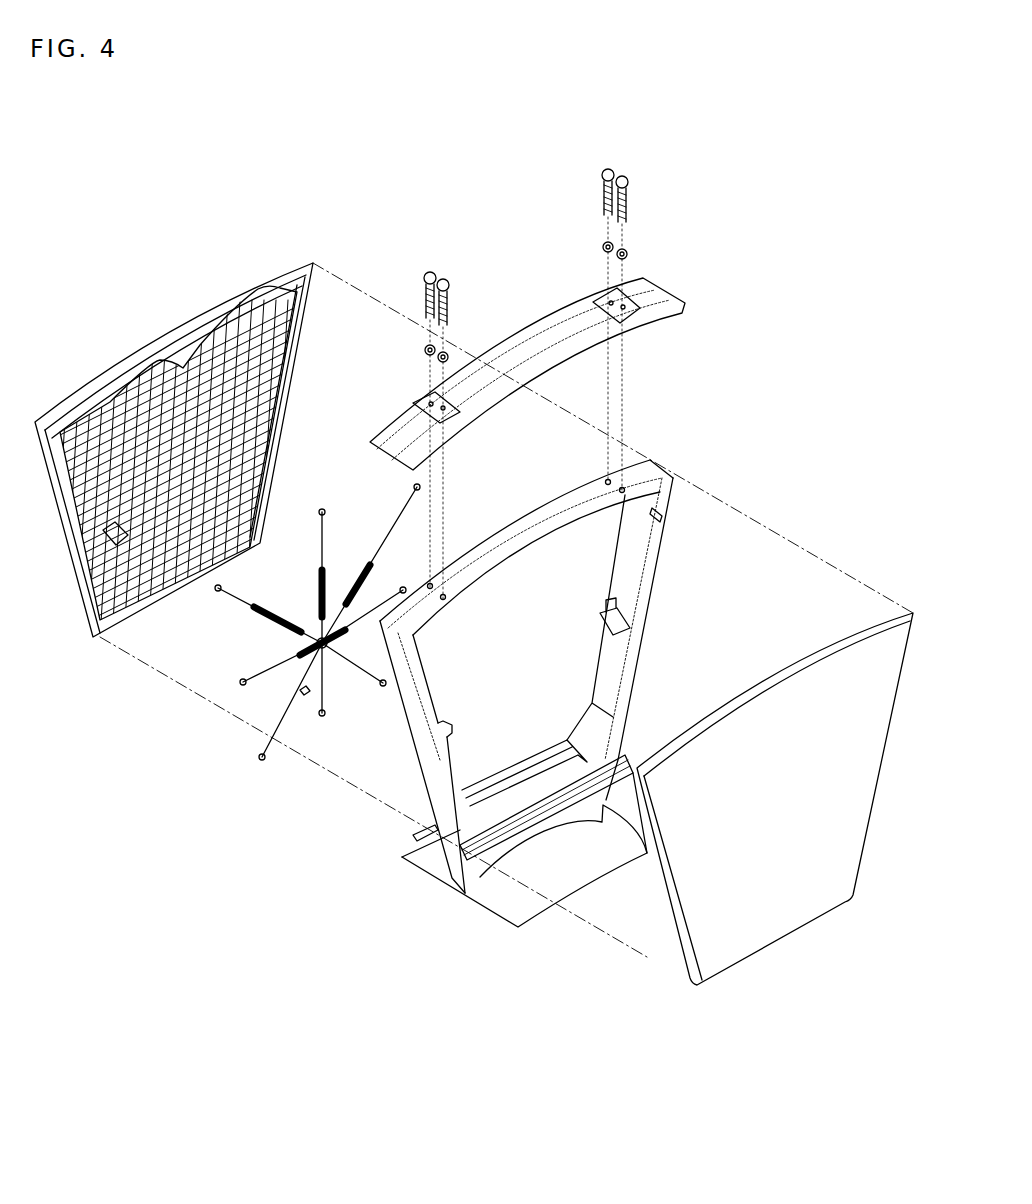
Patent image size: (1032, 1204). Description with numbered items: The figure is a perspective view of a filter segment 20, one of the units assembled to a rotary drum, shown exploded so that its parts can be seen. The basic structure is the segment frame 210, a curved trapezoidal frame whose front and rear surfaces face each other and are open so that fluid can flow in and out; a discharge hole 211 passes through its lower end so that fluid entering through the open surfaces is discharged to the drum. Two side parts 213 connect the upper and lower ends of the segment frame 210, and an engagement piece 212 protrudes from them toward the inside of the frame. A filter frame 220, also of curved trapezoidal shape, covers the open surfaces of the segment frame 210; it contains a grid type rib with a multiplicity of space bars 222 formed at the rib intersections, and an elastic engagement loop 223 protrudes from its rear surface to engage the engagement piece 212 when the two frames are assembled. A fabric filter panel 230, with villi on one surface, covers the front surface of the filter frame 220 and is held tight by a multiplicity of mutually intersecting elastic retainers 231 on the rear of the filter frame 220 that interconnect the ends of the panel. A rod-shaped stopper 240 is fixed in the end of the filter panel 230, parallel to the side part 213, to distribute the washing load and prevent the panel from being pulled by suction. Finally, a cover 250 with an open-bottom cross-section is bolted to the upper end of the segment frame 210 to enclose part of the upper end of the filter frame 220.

The filter segment 20 is at (293, 146).
The segment frame 210 is at (660, 456).
The discharge hole 211 is at (453, 830).
The engagement piece 212 is at (618, 608).
The side part 213 is at (662, 518).
The filter frame 220 is at (155, 607).
The space bar 222 is at (107, 397).
The elastic engagement loop 223 is at (120, 540).
The filter panel 230 is at (195, 312).
The elastic retainer 231 is at (303, 695).
The rod-shaped stopper 240 is at (298, 372).
The cover 250 is at (541, 317).